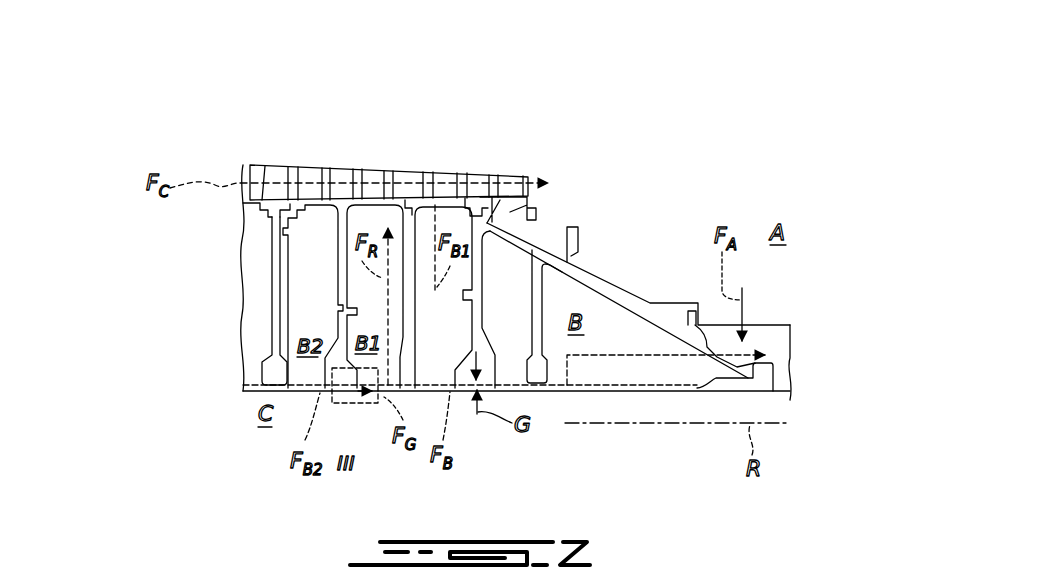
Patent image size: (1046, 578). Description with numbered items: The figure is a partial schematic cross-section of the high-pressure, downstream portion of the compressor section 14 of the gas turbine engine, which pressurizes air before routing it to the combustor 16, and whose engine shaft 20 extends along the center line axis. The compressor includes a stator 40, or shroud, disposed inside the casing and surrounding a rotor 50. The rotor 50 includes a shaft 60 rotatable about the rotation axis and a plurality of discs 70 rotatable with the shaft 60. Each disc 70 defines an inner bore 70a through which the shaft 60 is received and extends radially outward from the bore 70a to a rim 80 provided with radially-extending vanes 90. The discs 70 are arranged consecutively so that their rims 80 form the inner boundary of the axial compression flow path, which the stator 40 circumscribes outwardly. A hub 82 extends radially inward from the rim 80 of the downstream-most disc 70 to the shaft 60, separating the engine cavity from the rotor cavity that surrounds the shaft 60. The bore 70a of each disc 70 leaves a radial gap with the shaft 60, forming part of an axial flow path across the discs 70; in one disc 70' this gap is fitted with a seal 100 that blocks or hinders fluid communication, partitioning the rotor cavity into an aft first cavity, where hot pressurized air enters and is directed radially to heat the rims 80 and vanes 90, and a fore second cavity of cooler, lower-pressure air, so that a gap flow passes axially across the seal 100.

The compressor section 14 is at (596, 126).
The combustor 16 is at (792, 114).
The shaft 20 is at (906, 114).
The stator 40 is at (258, 152).
The rotor 50 is at (160, 252).
The shaft 60 is at (247, 390).
The disc 70 is at (211, 301).
The disc having the seal 70' is at (317, 307).
The inner bore 70a is at (300, 384).
The rim 80 is at (327, 212).
The hub 82 is at (550, 252).
The vane 90 is at (343, 181).
The seal 100 is at (372, 395).